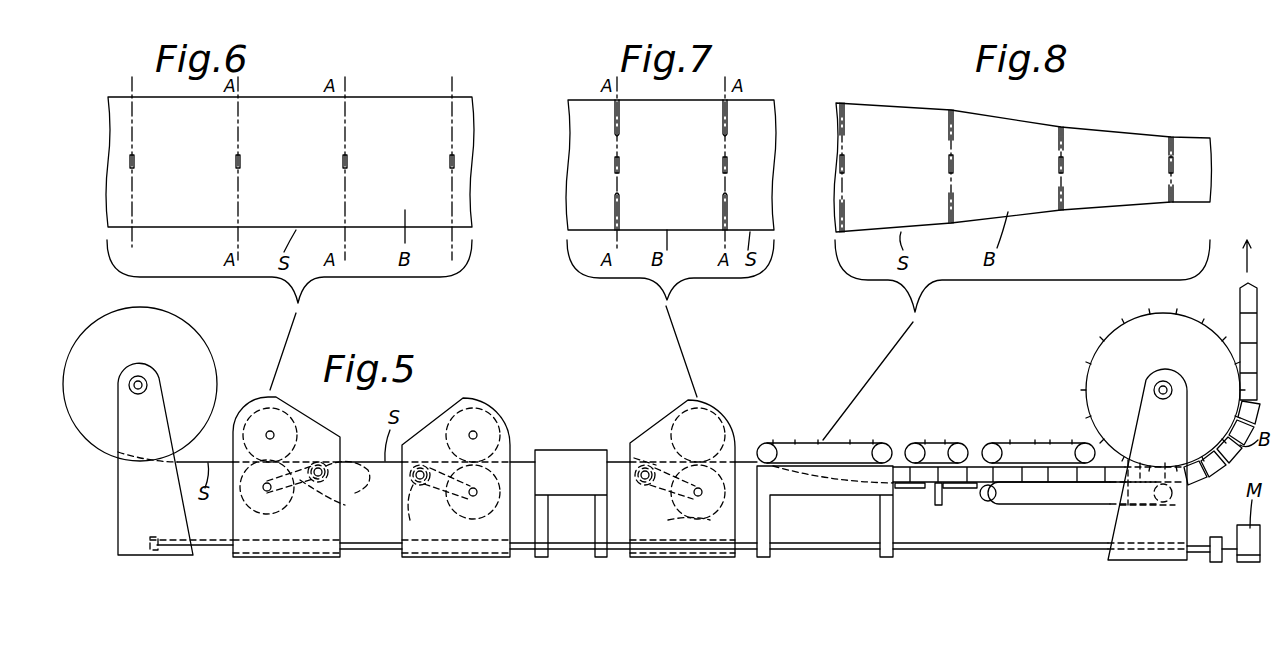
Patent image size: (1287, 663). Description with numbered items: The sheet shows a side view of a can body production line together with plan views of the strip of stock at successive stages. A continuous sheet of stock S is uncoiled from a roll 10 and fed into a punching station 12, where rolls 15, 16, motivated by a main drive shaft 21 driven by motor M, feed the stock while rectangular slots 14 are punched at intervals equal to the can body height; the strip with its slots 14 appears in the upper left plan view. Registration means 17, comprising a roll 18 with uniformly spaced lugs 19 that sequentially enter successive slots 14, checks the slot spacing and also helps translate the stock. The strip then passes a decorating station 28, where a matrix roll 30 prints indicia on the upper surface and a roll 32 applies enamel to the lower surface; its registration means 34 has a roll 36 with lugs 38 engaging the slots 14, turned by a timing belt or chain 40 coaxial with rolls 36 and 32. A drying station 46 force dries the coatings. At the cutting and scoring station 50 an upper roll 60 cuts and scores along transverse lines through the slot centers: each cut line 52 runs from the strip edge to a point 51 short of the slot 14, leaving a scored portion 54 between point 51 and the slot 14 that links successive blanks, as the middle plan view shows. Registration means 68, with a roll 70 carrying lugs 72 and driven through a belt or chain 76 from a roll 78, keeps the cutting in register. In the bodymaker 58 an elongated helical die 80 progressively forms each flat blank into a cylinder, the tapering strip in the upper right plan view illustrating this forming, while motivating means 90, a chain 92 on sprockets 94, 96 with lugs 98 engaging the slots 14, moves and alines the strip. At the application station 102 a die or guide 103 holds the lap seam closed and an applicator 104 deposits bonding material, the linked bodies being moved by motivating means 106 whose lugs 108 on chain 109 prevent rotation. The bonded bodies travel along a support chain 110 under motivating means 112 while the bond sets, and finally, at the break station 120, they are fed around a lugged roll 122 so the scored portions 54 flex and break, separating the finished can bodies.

In FIG. 5, the roll 10 is at (193, 347).
In FIG. 5, the punching station 12 is at (281, 573).
In FIG. 6, the holes 14 is at (135, 160).
In FIG. 7, the holes 14 is at (621, 166).
In FIG. 8, the holes 14 is at (845, 165).
In FIG. 5, the roll 15 is at (258, 408).
In FIG. 5, the roll 16 is at (262, 512).
In FIG. 5, the registration means 17 is at (328, 448).
In FIG. 5, the roll 18 is at (320, 484).
In FIG. 5, the lugs 19 is at (372, 448).
In FIG. 5, the main drive shaft 21 is at (358, 552).
In FIG. 5, the decorating station 28 is at (455, 578).
In FIG. 5, the roll 30 is at (490, 415).
In FIG. 5, the roll 32 is at (470, 520).
In FIG. 5, the registration means 34 is at (429, 449).
In FIG. 5, the roll 36 is at (400, 541).
In FIG. 5, the lugs 38 is at (398, 508).
In FIG. 5, the timing belt or chain 40 is at (425, 488).
In FIG. 5, the drying station 46 is at (570, 576).
In FIG. 5, the cutting and scoring station 50 is at (692, 597).
In FIG. 7, the point 51 is at (622, 135).
In FIG. 7, the line 52 is at (617, 113).
In FIG. 7, the scored portion 54 is at (618, 150).
In FIG. 5, the bodymaker 58 is at (819, 577).
In FIG. 5, the upper roll 60 is at (717, 418).
In FIG. 5, the registration means 68 is at (647, 445).
In FIG. 5, the roll 70 is at (652, 490).
In FIG. 5, the lugs 72 is at (648, 483).
In FIG. 5, the timing belt or chain 76 is at (672, 500).
In FIG. 5, the roll 78 is at (712, 516).
In FIG. 5, the die 80 is at (838, 480).
In FIG. 5, the motivating means 90 is at (870, 435).
In FIG. 5, the chain 92 is at (808, 442).
In FIG. 5, the sprocket 94 is at (780, 442).
In FIG. 5, the sprocket 96 is at (889, 443).
In FIG. 5, the lugs 98 is at (824, 440).
In FIG. 5, the application station 102 is at (935, 570).
In FIG. 5, the die or guide 103 is at (914, 490).
In FIG. 5, the applicator 104 is at (942, 506).
In FIG. 5, the motivating means 106 is at (951, 434).
In FIG. 5, the lugs 108 is at (953, 442).
In FIG. 5, the chain 109 is at (929, 442).
In FIG. 5, the support chain 110 is at (1052, 502).
In FIG. 5, the motivating means 112 is at (1040, 441).
In FIG. 5, the break station 120 is at (1133, 577).
In FIG. 5, the roll 122 is at (1167, 337).